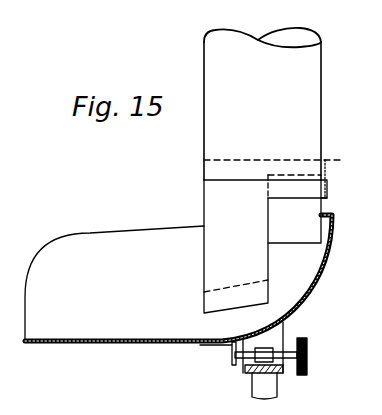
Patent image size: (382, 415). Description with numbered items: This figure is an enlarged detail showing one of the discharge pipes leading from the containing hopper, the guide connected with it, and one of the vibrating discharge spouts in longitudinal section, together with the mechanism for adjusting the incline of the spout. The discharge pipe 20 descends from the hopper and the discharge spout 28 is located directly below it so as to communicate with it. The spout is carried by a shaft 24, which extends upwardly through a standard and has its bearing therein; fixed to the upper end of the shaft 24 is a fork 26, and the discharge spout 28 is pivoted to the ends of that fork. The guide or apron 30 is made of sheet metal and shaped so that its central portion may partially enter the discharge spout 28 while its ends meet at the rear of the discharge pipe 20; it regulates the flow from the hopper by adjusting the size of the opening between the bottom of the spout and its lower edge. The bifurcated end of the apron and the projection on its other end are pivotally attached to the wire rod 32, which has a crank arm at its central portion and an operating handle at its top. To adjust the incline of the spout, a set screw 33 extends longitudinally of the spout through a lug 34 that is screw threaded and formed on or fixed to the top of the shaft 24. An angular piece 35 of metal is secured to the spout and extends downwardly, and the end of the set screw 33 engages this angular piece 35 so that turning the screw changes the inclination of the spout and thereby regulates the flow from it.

The discharge pipe 20 is at (272, 113).
The shaft 24 is at (272, 387).
The fork 26 is at (247, 373).
The discharge spout 28 is at (178, 278).
The guide or apron 30 is at (265, 244).
The wire rod 32 is at (322, 180).
The set screw 33 is at (307, 353).
The lug 34 is at (263, 356).
The angular piece 35 is at (232, 346).